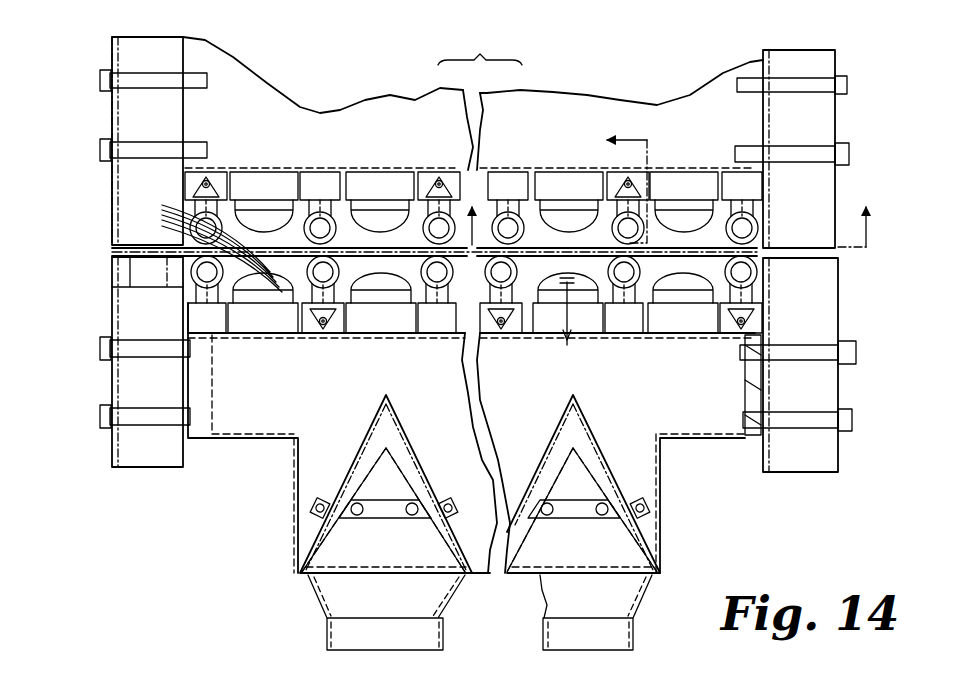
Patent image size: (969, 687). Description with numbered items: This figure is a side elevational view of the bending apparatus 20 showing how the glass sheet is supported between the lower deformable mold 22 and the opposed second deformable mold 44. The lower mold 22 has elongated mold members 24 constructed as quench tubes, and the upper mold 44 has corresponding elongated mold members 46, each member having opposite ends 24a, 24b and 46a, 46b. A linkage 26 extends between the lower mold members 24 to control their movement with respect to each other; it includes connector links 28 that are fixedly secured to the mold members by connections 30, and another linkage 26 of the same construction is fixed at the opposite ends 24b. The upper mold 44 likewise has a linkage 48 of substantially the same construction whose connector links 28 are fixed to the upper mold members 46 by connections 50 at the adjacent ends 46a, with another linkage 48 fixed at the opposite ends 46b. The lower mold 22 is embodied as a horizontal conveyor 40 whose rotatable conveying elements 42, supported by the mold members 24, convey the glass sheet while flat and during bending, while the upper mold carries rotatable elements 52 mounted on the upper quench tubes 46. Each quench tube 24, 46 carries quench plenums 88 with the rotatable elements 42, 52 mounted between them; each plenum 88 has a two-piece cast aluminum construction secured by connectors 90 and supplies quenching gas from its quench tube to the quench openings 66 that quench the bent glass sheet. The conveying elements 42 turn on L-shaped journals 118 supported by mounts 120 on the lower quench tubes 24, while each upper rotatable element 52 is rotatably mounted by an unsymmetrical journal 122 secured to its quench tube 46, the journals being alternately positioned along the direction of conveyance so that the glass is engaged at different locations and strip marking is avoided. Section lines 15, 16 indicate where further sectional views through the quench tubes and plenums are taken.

The apparatus 20 is at (128, 35).
The deformable mold 22 is at (104, 439).
The mold members 24 is at (273, 386).
The end of mold member 24a is at (213, 443).
The opposite end of mold member 24b is at (703, 443).
The linkage 26 is at (108, 320).
The connector links 28 is at (152, 358).
The connections 30 is at (147, 407).
The horizontal conveyor 40 is at (180, 253).
The rotatable conveying elements 42 is at (166, 308).
The second deformable mold 44 is at (108, 184).
The mold members of second deformable mold 46 is at (385, 100).
The end of upper mold member 46a is at (265, 85).
The opposite end of upper mold member 46b is at (700, 93).
The linkage of second deformable mold 48 is at (108, 60).
The connections 50 is at (147, 88).
The rotatable elements 52 is at (187, 217).
The quench openings 66 is at (209, 248).
The quench plenums 88 is at (242, 197).
The connectors 90 is at (570, 345).
The L-shaped journals 118 is at (230, 307).
The mounts 120 is at (216, 337).
The unsymmetrical journal 122 is at (300, 196).
The section line 15- 15 is at (669, 210).
The section line 16- 16 is at (641, 188).